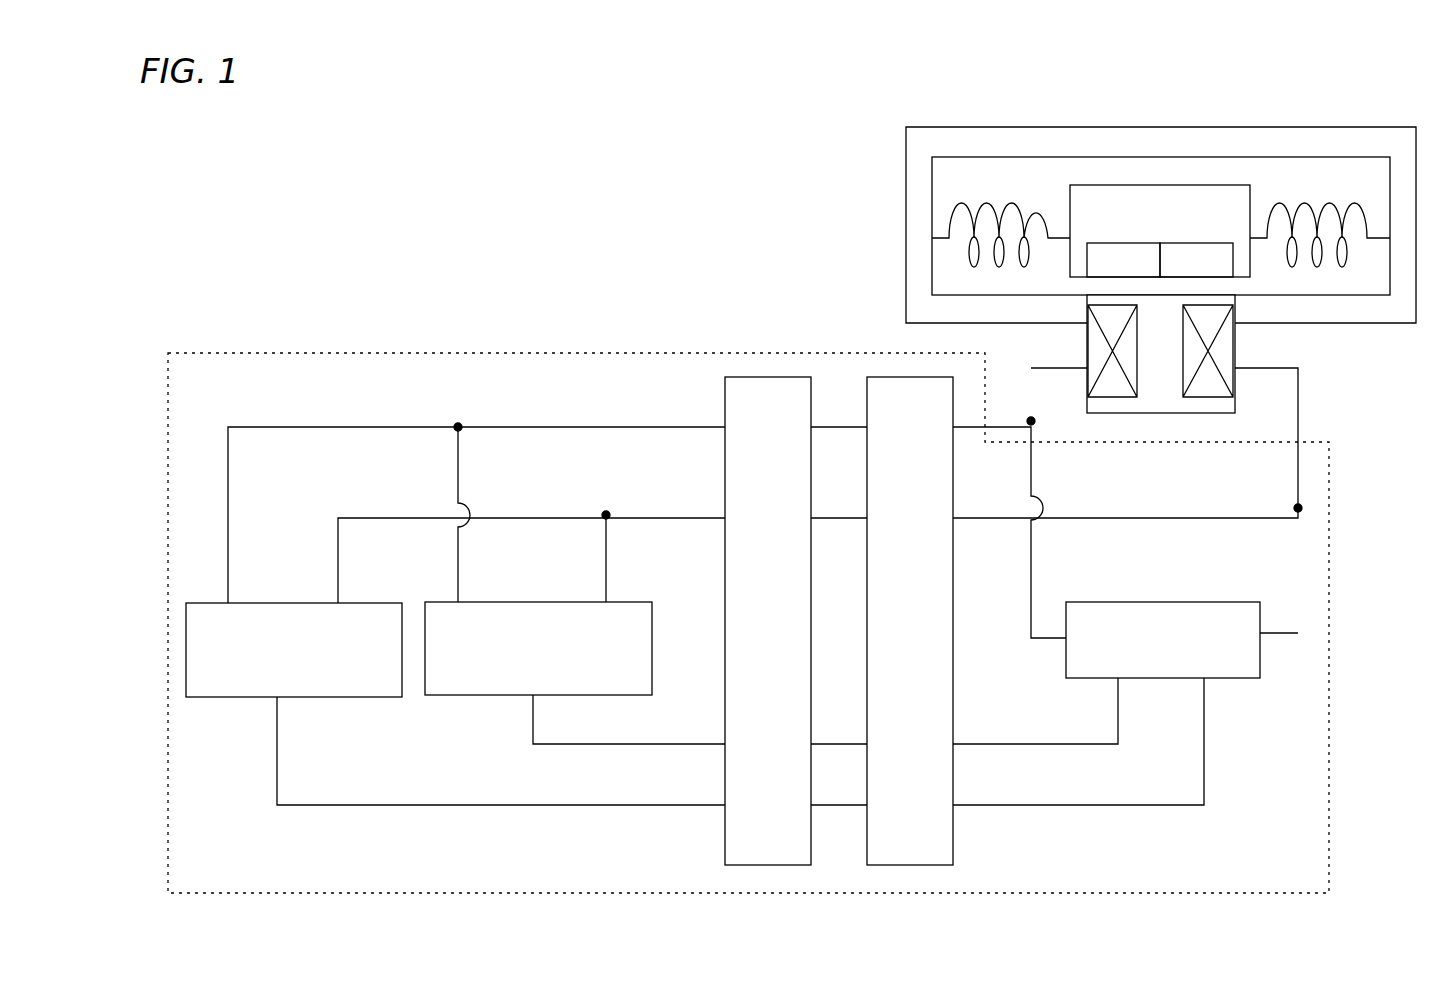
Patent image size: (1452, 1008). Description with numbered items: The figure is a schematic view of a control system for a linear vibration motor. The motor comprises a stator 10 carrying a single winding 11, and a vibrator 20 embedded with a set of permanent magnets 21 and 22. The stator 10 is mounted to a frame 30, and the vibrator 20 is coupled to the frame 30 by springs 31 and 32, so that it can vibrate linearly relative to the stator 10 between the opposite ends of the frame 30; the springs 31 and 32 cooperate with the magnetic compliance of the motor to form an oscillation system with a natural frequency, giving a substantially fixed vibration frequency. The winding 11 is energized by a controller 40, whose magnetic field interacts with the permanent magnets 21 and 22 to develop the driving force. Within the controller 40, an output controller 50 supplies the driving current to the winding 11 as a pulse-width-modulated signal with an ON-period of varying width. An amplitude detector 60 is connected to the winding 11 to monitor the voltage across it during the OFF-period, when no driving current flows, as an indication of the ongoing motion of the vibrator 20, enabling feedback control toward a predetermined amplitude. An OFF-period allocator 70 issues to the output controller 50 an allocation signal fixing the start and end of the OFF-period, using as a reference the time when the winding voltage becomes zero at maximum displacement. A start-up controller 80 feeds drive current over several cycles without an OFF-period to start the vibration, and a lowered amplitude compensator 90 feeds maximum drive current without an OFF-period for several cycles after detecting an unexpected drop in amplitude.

The stator 10 is at (1200, 413).
The winding 11 is at (1237, 352).
The vibrator 20 is at (1155, 185).
The permanent magnet 21 is at (1118, 243).
The permanent magnet 22 is at (1203, 243).
The frame 30 is at (904, 127).
The spring 31 is at (1000, 203).
The spring 32 is at (1320, 195).
The controller 40 is at (1328, 558).
The output controller 50 is at (1225, 678).
The amplitude detector 60 is at (483, 697).
The OFF-period allocator 70 is at (353, 697).
The start-up controller 80 is at (954, 835).
The lowered amplitude compensator 90 is at (727, 847).